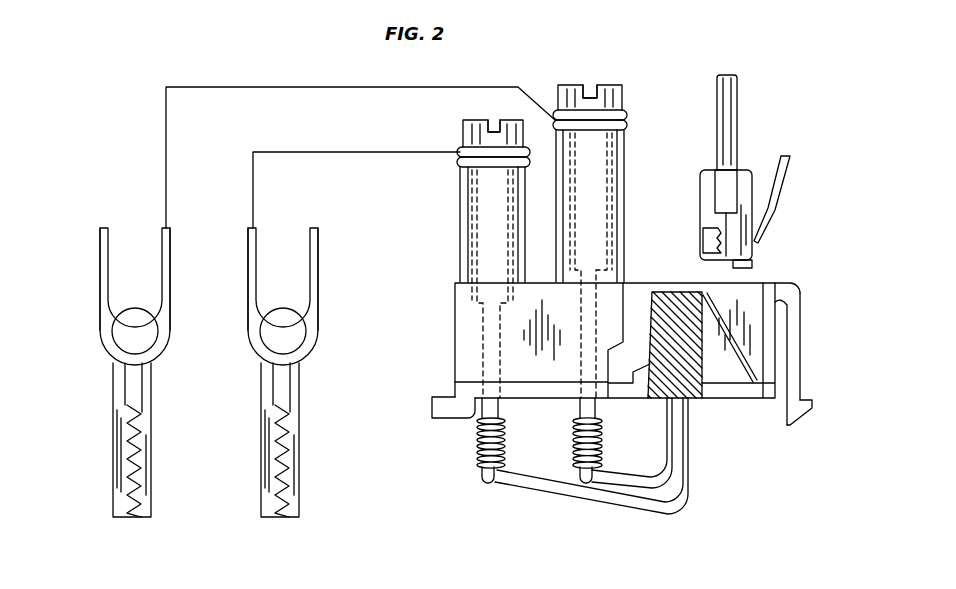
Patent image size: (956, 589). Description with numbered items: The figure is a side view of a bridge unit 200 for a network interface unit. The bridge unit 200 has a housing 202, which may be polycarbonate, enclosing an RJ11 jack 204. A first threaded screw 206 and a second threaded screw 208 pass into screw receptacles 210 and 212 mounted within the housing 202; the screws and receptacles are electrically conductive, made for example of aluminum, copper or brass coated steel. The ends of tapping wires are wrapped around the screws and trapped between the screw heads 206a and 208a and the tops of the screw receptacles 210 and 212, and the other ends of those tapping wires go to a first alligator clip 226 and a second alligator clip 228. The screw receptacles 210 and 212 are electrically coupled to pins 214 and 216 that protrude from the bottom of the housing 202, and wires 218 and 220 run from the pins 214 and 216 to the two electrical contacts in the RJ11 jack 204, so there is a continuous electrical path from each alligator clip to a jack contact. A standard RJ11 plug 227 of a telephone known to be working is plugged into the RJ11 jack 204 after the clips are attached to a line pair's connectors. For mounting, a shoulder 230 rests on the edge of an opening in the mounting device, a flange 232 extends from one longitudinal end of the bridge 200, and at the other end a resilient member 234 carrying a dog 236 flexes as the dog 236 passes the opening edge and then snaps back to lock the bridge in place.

The bridge unit 200 is at (456, 455).
The housing 202 is at (640, 292).
The RJ11 jack 204 is at (750, 290).
The first threaded screw 206 is at (623, 101).
The screw head 206a is at (580, 85).
The second threaded screw 208 is at (463, 131).
The screw head 208a is at (494, 120).
The screw receptacle 210 is at (625, 153).
The screw receptacle 212 is at (462, 235).
The pin 214 is at (598, 407).
The pin 216 is at (502, 407).
The wire 218 is at (587, 493).
The wire 220 is at (667, 452).
The first alligator clip 226 is at (113, 460).
The second alligator clip 228 is at (262, 458).
The RJ11 plug 227 is at (753, 242).
The shoulder 230 is at (730, 377).
The flange 232 is at (432, 405).
The resilient member 234 is at (797, 350).
The dog 236 is at (800, 412).